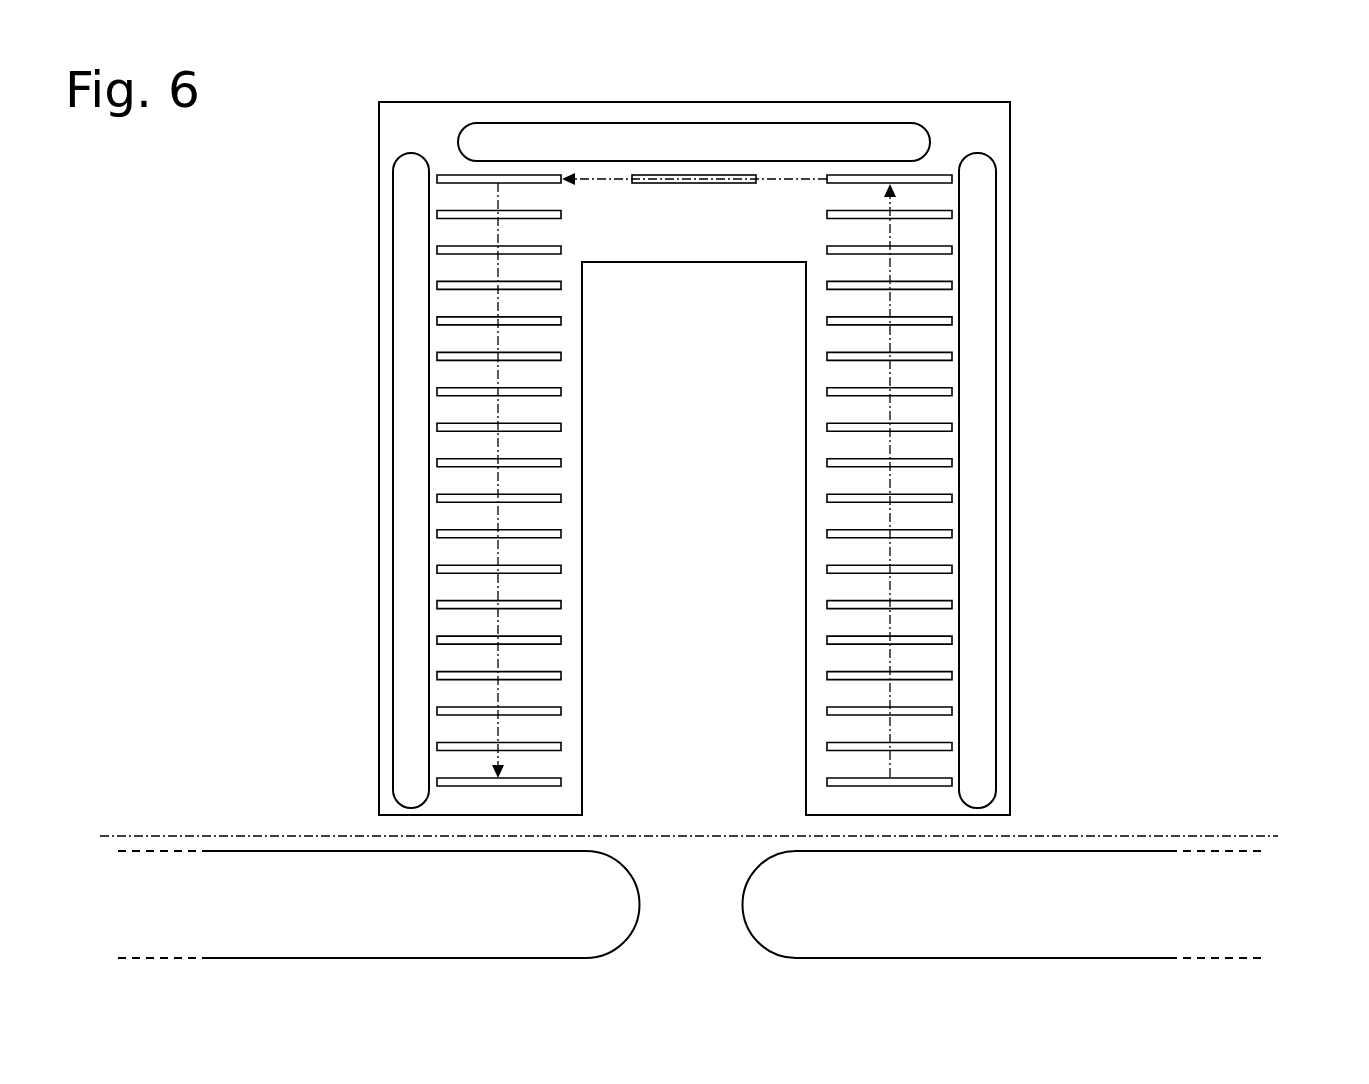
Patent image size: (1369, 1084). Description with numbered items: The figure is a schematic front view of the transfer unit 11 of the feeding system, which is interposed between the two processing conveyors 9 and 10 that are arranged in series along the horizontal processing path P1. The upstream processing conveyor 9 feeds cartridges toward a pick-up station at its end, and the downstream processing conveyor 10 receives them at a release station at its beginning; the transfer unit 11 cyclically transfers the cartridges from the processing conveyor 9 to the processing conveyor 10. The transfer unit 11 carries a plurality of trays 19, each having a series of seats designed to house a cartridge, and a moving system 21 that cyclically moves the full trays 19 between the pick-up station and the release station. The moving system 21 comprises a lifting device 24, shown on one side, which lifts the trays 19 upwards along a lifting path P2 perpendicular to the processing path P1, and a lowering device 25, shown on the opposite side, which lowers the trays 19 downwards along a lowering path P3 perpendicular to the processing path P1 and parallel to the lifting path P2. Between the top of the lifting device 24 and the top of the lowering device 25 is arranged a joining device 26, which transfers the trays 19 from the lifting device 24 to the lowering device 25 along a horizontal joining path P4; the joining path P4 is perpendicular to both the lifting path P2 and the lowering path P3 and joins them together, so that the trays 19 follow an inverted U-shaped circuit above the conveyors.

The moving system 21 is at (197, 583).
The transfer unit 11 is at (1205, 307).
The joining device 26 is at (843, 88).
The lowering device 25 is at (340, 465).
The lifting device 24 is at (1046, 450).
The tray 19 is at (455, 252).
The lowering path P3 is at (500, 552).
The lifting path P2 is at (885, 590).
The joining path P4 is at (785, 180).
The processing path P1 is at (1212, 836).
The processing conveyor 10 is at (218, 812).
The processing conveyor 9 is at (1104, 806).